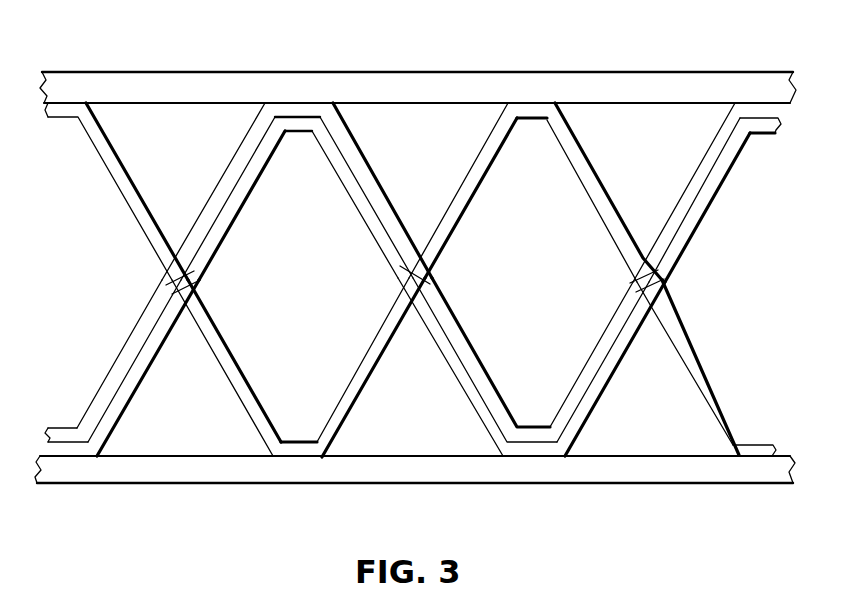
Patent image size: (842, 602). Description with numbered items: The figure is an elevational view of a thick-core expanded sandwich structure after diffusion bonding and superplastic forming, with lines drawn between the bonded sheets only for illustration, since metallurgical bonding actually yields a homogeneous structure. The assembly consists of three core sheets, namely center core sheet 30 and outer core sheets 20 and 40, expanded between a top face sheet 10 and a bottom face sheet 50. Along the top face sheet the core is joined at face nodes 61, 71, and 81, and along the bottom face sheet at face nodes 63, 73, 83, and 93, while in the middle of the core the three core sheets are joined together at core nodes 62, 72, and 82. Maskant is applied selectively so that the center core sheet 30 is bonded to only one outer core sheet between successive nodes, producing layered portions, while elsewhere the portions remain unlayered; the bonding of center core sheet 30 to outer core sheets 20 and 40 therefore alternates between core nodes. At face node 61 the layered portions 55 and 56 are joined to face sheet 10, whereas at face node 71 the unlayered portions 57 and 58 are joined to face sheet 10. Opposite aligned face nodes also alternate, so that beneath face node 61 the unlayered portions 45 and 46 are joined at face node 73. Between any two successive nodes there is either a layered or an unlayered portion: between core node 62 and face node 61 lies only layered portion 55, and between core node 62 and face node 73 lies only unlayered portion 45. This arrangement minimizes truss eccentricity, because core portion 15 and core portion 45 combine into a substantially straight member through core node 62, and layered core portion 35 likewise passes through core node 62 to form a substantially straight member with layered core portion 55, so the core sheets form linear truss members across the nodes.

The face sheet 10 is at (76, 75).
The face sheet 50 is at (143, 477).
The core portion 15 is at (128, 203).
The outer core sheet 20 is at (728, 138).
The center core sheet 30 is at (703, 207).
The layered core portion 35 is at (120, 345).
The outer core sheet 40 is at (714, 380).
The core portion 45 is at (238, 359).
The unlayered portion 46 is at (368, 371).
The layered core portion 55 is at (225, 170).
The layered portion 56 is at (372, 176).
The unlayered portion 57 is at (478, 186).
The unlayered portion 58 is at (605, 190).
The face node 61 is at (296, 108).
The core node 62 is at (196, 272).
The face node 63 is at (92, 448).
The face node 71 is at (527, 108).
The core node 72 is at (424, 282).
The face node 73 is at (300, 451).
The face node 81 is at (757, 110).
The core node 82 is at (662, 278).
The face node 83 is at (543, 436).
The face node 93 is at (740, 446).